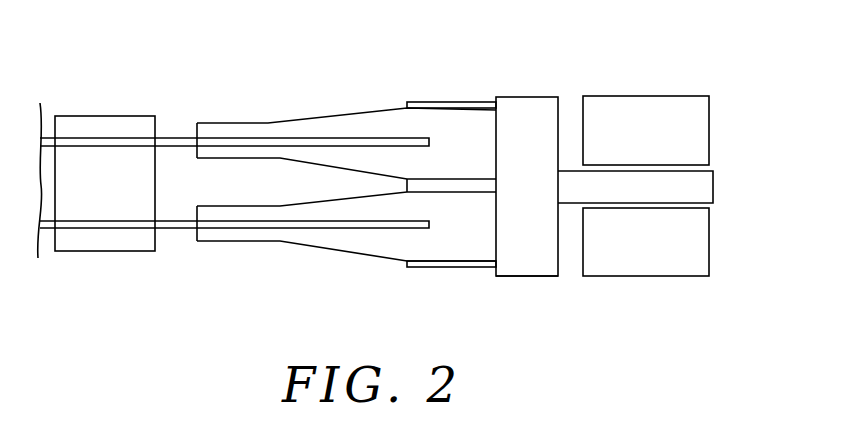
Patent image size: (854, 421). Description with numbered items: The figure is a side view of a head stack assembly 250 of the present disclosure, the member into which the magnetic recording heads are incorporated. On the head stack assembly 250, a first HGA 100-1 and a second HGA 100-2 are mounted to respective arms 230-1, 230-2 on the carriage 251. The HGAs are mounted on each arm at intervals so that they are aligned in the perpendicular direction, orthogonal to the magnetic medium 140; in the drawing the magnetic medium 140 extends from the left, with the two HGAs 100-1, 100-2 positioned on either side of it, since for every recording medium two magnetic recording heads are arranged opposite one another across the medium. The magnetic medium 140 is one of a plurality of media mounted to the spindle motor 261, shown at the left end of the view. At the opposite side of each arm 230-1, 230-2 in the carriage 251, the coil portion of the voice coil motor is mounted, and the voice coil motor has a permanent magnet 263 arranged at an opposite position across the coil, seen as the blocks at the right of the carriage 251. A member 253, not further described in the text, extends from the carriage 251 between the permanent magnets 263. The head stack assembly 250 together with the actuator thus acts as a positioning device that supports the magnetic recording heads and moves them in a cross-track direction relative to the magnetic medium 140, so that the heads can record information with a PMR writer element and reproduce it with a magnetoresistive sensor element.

The first HGA 100-1 is at (290, 128).
The second HGA 100-2 is at (287, 242).
The magnetic medium 140 is at (168, 138).
The arm 230-1 is at (414, 102).
The arm 230-2 is at (413, 268).
The head stack assembly 250 is at (534, 76).
The carriage 251 is at (525, 264).
The shaft 253 is at (703, 185).
The spindle motor 261 is at (95, 130).
The permanent magnet 263 is at (645, 110).